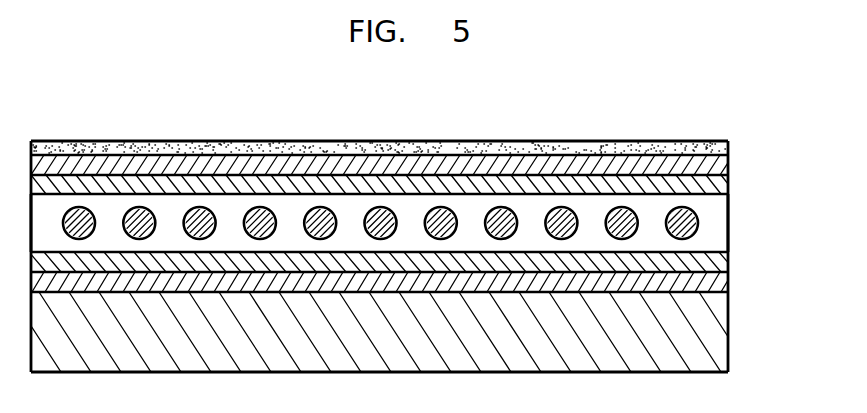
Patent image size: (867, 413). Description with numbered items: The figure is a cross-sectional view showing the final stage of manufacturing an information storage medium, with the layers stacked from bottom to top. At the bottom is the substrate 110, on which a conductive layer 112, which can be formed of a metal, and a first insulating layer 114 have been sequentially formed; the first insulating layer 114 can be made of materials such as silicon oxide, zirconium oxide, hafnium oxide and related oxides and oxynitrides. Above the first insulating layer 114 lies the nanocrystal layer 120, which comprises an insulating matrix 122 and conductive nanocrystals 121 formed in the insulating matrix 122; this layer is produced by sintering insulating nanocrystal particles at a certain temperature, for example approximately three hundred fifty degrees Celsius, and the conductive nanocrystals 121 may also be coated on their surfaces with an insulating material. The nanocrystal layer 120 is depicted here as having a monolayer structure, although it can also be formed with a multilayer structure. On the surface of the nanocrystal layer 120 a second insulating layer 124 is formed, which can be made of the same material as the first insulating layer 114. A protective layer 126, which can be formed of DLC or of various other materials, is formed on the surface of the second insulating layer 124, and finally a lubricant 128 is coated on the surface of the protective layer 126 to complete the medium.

The substrate 110 is at (730, 331).
The conductive layer 112 is at (730, 283).
The first insulating layer 114 is at (730, 263).
The nanocrystal layer 120 is at (439, 223).
The conductive nanocrystals 121 is at (697, 229).
The insulating matrix 122 is at (732, 211).
The second insulating layer 124 is at (730, 183).
The protective layer 126 is at (730, 164).
The lubricant 128 is at (730, 146).